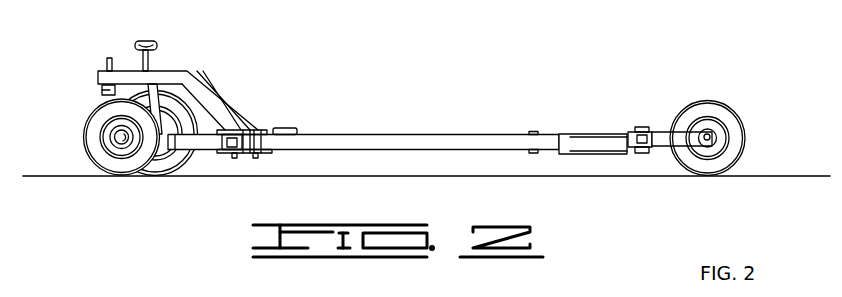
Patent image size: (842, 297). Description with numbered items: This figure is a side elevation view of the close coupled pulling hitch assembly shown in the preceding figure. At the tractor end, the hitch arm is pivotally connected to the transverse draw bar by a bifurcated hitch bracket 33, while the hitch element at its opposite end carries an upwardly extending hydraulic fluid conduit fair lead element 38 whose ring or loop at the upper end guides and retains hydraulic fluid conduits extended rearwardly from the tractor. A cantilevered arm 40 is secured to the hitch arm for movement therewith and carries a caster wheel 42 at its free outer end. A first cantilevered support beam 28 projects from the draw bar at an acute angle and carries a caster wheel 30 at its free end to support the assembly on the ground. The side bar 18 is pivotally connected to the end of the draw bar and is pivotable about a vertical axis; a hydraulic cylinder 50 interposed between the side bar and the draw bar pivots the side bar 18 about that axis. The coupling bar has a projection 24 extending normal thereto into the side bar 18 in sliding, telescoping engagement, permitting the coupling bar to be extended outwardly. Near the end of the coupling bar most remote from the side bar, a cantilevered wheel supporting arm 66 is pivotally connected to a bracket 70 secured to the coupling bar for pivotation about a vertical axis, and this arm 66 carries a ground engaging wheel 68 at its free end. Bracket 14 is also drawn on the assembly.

The hitch coupling 14 is at (243, 154).
The side bar 18 is at (358, 142).
The projection 24 is at (582, 140).
The first cantilevered support beam 28 is at (203, 77).
The caster wheel 30 is at (158, 167).
The bifurcated hitch bracket 33 is at (224, 153).
The hydraulic fluid conduit fair lead element 38 is at (157, 44).
The cantilevered arm 40 is at (207, 100).
The caster wheel 42 is at (96, 143).
The hydraulic cylinder 50 is at (281, 128).
The cantilevered wheel supporting arm 66 is at (673, 122).
The ground engaging wheel 68 is at (708, 108).
The bracket 70 is at (630, 153).